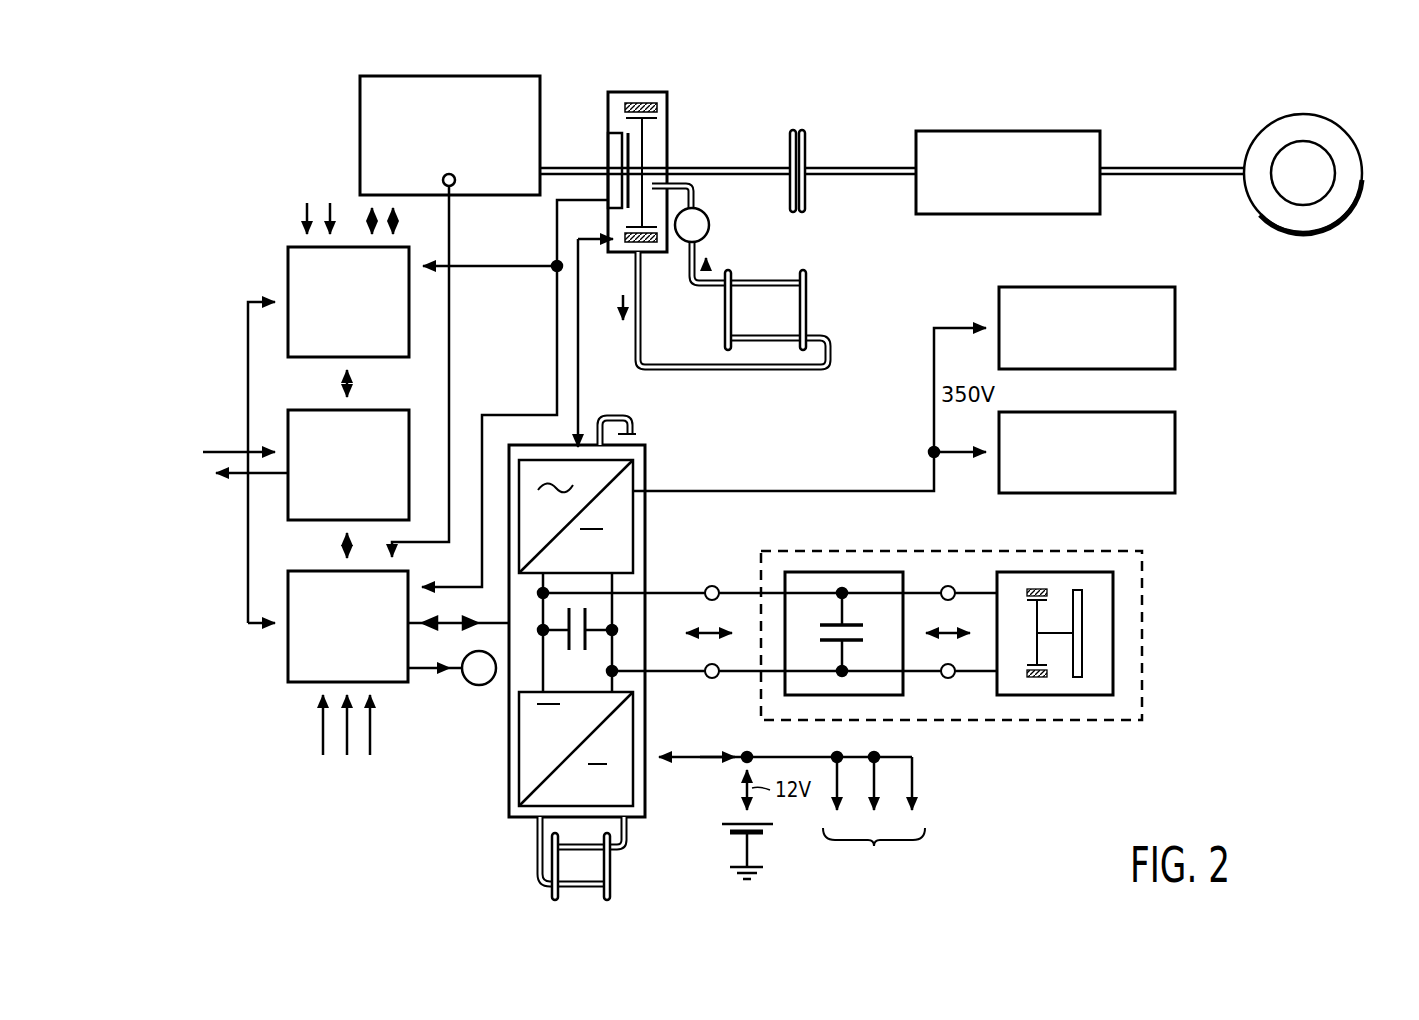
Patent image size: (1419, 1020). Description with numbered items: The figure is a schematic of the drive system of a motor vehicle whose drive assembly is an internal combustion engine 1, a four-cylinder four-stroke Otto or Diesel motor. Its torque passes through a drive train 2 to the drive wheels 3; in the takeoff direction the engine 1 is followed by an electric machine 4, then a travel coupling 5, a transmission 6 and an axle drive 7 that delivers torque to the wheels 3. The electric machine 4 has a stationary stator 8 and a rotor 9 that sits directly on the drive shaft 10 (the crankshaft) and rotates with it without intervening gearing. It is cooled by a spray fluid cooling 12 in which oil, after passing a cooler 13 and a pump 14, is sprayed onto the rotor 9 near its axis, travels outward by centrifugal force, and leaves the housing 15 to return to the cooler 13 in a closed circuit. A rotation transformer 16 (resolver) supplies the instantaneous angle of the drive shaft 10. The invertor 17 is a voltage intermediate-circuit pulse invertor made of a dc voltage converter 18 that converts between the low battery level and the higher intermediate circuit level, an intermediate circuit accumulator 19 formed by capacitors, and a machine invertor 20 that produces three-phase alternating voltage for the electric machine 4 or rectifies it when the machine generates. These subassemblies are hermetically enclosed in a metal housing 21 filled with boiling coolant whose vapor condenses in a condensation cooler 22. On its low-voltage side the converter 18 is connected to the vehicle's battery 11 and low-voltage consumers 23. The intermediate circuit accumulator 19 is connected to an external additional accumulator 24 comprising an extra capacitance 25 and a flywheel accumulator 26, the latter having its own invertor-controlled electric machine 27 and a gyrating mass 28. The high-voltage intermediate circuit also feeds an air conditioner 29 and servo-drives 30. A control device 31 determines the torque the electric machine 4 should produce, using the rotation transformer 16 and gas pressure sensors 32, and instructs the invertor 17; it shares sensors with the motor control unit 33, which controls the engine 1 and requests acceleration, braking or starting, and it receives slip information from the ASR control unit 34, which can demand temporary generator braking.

The internal combustion engine 1 is at (378, 76).
The drive train 2 is at (1372, 131).
The drive wheels 3 is at (1283, 125).
The electric machine 4 is at (658, 86).
The travel coupling 5 is at (807, 124).
The transmission 6 is at (1007, 131).
The axle drive 7 is at (1157, 168).
The stator 8 is at (658, 108).
The rotor 9 is at (645, 143).
The drive shaft 10 is at (569, 167).
The vehicle's battery 11 is at (725, 824).
The spray fluid cooling 12 is at (730, 254).
The cooler 13 is at (790, 310).
The pump 14 is at (709, 225).
The housing 15 is at (632, 92).
The rotation transformer 16 is at (608, 140).
The invertor 17 is at (495, 746).
The dc voltage converter 18 is at (530, 783).
The intermediate circuit accumulator 19 is at (562, 652).
The machine invertor 20 is at (625, 510).
The metal housing 21 is at (645, 462).
The condensation cooler 22 is at (595, 868).
The low-voltage consumers 23 is at (874, 815).
The additional accumulator 24 is at (1142, 692).
The extra capacitance 25 is at (852, 590).
The flywheel accumulator 26 is at (1057, 695).
The electric machine 27 is at (1058, 588).
The gyrating mass 28 is at (1083, 612).
The air conditioner 29 is at (1165, 432).
The servo-drives 30 is at (1162, 323).
The control device 31 is at (288, 660).
The gas pressure sensors 32 is at (443, 180).
The motor control unit 33 is at (288, 270).
The ASR control unit 34 is at (305, 520).